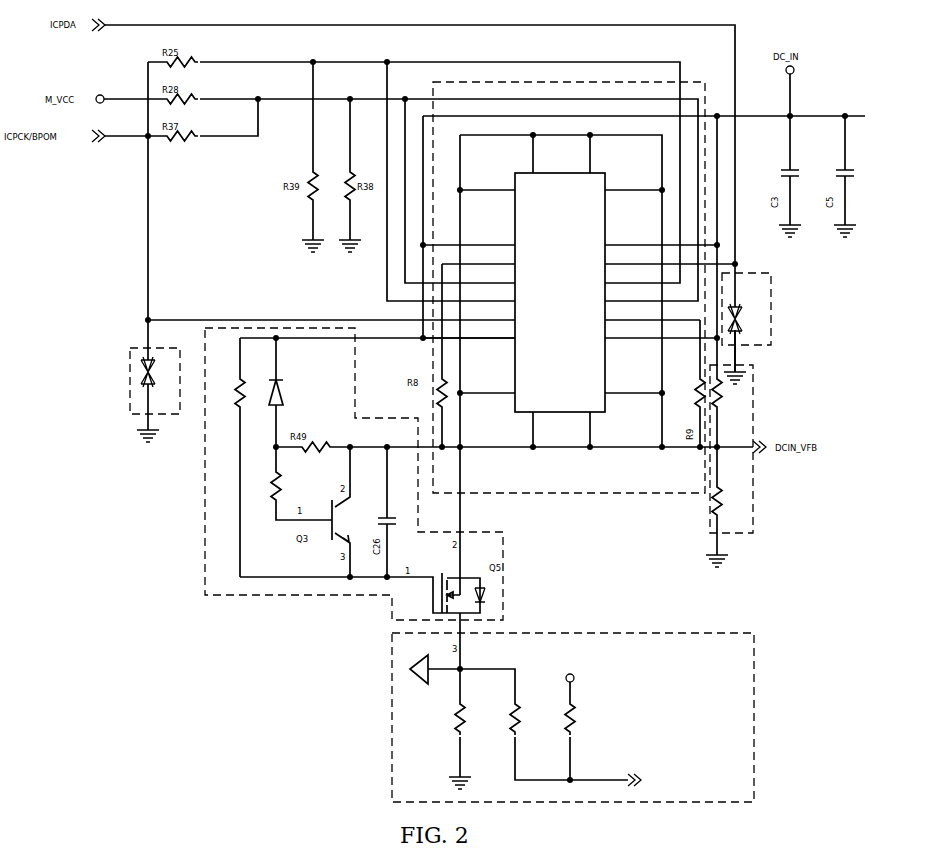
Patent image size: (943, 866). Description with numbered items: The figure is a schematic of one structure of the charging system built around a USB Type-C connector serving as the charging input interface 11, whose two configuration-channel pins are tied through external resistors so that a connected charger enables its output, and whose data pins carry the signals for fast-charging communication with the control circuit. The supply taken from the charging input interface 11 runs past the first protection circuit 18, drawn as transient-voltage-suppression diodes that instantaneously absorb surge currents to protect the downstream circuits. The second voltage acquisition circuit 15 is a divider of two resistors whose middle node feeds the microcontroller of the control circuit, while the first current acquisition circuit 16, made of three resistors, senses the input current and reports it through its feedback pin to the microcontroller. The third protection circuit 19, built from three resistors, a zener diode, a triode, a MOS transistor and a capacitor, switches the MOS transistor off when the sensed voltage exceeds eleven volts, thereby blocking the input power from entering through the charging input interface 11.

The charging input interface 11 is at (625, 493).
The second voltage acquisition circuit 15 is at (753, 428).
The first current acquisition circuit 16 is at (755, 715).
The first protection circuit 18 is at (130, 390).
The third protection circuit 19 is at (205, 548).